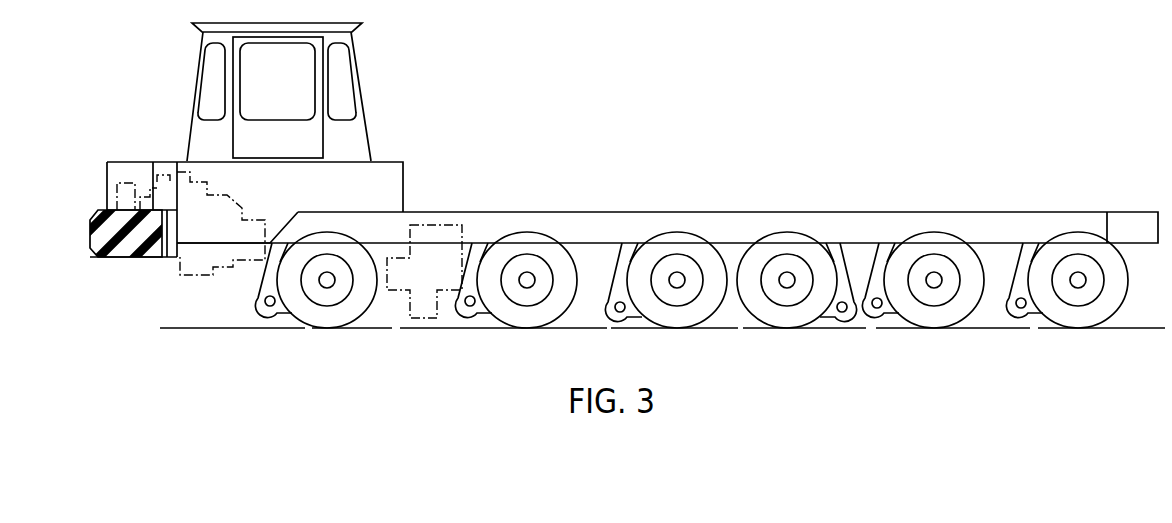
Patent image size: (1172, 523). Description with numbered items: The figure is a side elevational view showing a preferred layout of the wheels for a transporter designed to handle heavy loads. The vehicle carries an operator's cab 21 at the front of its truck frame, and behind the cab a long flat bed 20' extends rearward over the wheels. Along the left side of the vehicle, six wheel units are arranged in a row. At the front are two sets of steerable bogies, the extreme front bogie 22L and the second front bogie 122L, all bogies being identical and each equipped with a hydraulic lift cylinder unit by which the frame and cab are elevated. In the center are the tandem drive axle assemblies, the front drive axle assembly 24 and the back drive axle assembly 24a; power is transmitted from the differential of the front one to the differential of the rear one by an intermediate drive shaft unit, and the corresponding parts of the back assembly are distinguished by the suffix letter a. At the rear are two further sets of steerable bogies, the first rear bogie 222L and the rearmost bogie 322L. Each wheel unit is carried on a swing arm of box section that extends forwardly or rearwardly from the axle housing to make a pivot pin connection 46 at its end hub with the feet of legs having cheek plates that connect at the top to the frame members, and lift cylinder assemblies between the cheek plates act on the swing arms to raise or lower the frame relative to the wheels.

The operator's cab 21 is at (361, 83).
The vehicle chassis / deck 20' is at (667, 194).
The pivot pin connection 46 is at (262, 303).
The left extreme front bogie 22L is at (310, 328).
The left second front bogie 122L is at (500, 324).
The front drive axle assembly 24 is at (660, 328).
The back drive axle assembly 24a is at (768, 328).
The left first rear bogie 222L is at (907, 328).
The left rearmost bogie 322L is at (1053, 328).